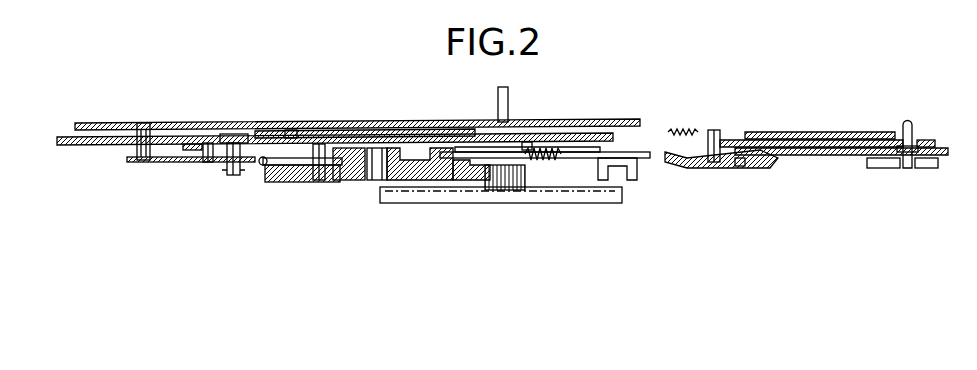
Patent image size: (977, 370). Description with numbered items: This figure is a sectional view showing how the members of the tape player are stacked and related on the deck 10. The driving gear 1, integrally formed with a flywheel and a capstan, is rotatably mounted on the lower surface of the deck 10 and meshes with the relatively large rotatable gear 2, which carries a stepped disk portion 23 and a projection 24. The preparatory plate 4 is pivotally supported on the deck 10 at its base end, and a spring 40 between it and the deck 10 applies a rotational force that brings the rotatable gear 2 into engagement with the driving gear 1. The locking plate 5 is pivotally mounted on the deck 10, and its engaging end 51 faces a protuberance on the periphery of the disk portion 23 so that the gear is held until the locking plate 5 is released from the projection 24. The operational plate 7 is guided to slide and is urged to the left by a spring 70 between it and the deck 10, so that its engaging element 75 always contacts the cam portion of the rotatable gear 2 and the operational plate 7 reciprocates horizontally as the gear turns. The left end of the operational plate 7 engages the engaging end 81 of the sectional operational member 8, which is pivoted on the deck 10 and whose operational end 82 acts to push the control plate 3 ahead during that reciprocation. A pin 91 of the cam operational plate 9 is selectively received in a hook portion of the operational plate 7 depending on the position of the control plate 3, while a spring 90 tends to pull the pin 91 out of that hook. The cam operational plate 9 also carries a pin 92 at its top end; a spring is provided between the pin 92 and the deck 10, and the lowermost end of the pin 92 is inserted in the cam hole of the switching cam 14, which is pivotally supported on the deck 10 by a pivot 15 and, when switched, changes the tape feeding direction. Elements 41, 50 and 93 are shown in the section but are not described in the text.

The gear 1 is at (497, 196).
The rotatable gear 2 is at (345, 182).
The control plate 3 is at (405, 122).
The preparatory plate 4 is at (280, 178).
The locking plate 5 is at (593, 160).
The operational plate 7 is at (883, 168).
The operational member 8 is at (157, 162).
The cam operational plate 9 is at (365, 131).
The deck 10 is at (72, 146).
The switching cam 14 is at (760, 168).
The pivot 15 is at (738, 166).
The disk portion 23 is at (463, 170).
The projection 24 is at (432, 183).
The spring 40 is at (258, 168).
The screw 41 is at (310, 180).
The bracket 50 is at (640, 166).
The engaging end 51 is at (455, 147).
The spring 70 is at (545, 148).
The engaging element 75 is at (390, 183).
The engaging end 81 is at (208, 163).
The operational end 82 is at (138, 160).
The spring 90 is at (908, 120).
The pin 91 is at (915, 148).
The pin 92 is at (716, 130).
The spring 93 is at (690, 128).